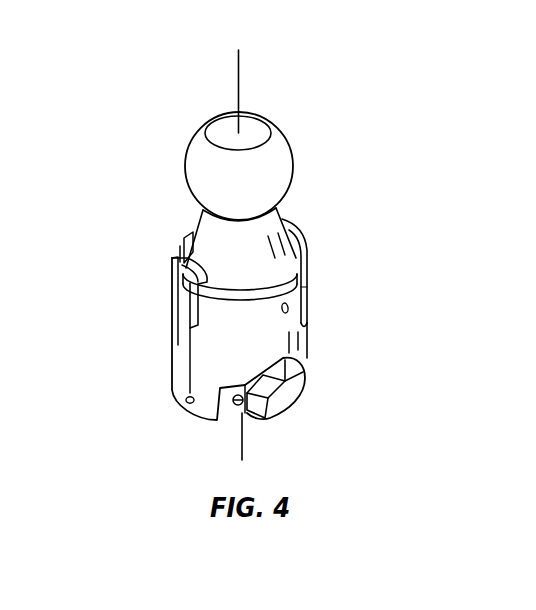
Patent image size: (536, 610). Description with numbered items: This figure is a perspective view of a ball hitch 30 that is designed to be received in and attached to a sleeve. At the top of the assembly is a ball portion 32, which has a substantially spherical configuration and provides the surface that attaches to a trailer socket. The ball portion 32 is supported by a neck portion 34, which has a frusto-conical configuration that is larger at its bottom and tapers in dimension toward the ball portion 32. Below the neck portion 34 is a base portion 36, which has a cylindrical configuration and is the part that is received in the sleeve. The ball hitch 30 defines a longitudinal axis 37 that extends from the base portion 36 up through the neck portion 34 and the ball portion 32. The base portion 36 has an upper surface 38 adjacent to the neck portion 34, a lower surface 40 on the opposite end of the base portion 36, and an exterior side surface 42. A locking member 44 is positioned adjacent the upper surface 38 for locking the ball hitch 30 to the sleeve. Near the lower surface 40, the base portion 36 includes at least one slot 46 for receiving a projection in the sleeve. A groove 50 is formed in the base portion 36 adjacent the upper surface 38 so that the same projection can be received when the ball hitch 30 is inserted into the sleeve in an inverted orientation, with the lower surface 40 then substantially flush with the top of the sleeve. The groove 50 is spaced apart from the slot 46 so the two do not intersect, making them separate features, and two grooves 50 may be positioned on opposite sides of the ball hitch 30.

The ball hitch 30 is at (297, 221).
The ball portion 32 is at (203, 173).
The neck portion 34 is at (219, 245).
The base portion 36 is at (187, 358).
The longitudinal axis 37 is at (238, 78).
The upper surface 38 is at (306, 247).
The lower surface 40 is at (293, 400).
The exterior side surface 42 is at (305, 343).
The locking member 44 is at (190, 306).
The slot 46 is at (223, 405).
The groove 50 is at (303, 283).